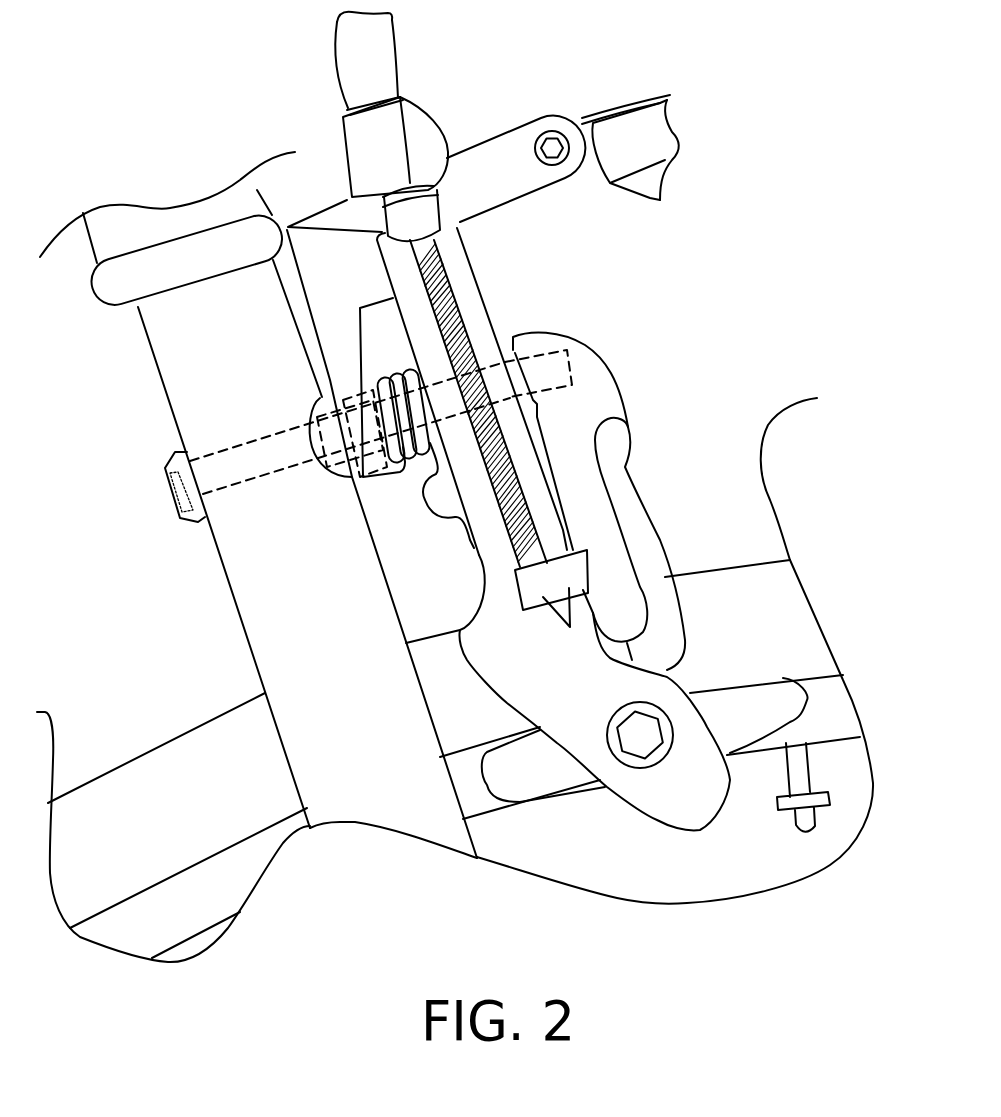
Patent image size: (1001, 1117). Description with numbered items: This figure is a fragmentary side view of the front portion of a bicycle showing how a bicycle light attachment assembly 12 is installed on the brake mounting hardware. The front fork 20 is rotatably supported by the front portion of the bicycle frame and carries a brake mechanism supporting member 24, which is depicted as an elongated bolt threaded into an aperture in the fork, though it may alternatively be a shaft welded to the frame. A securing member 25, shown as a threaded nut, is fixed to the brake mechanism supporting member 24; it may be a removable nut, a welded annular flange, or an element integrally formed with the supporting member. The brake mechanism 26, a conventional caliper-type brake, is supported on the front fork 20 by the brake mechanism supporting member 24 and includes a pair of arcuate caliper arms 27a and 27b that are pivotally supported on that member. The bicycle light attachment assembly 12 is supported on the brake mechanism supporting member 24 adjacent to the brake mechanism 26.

The bicycle light attachment assembly 12 is at (528, 119).
The front fork 20 is at (153, 335).
The brake mechanism supporting member 24 is at (262, 487).
The securing member 25 is at (399, 485).
The brake mechanism 26 is at (610, 363).
The caliper arm 27a is at (583, 366).
The caliper arm 27b is at (492, 539).